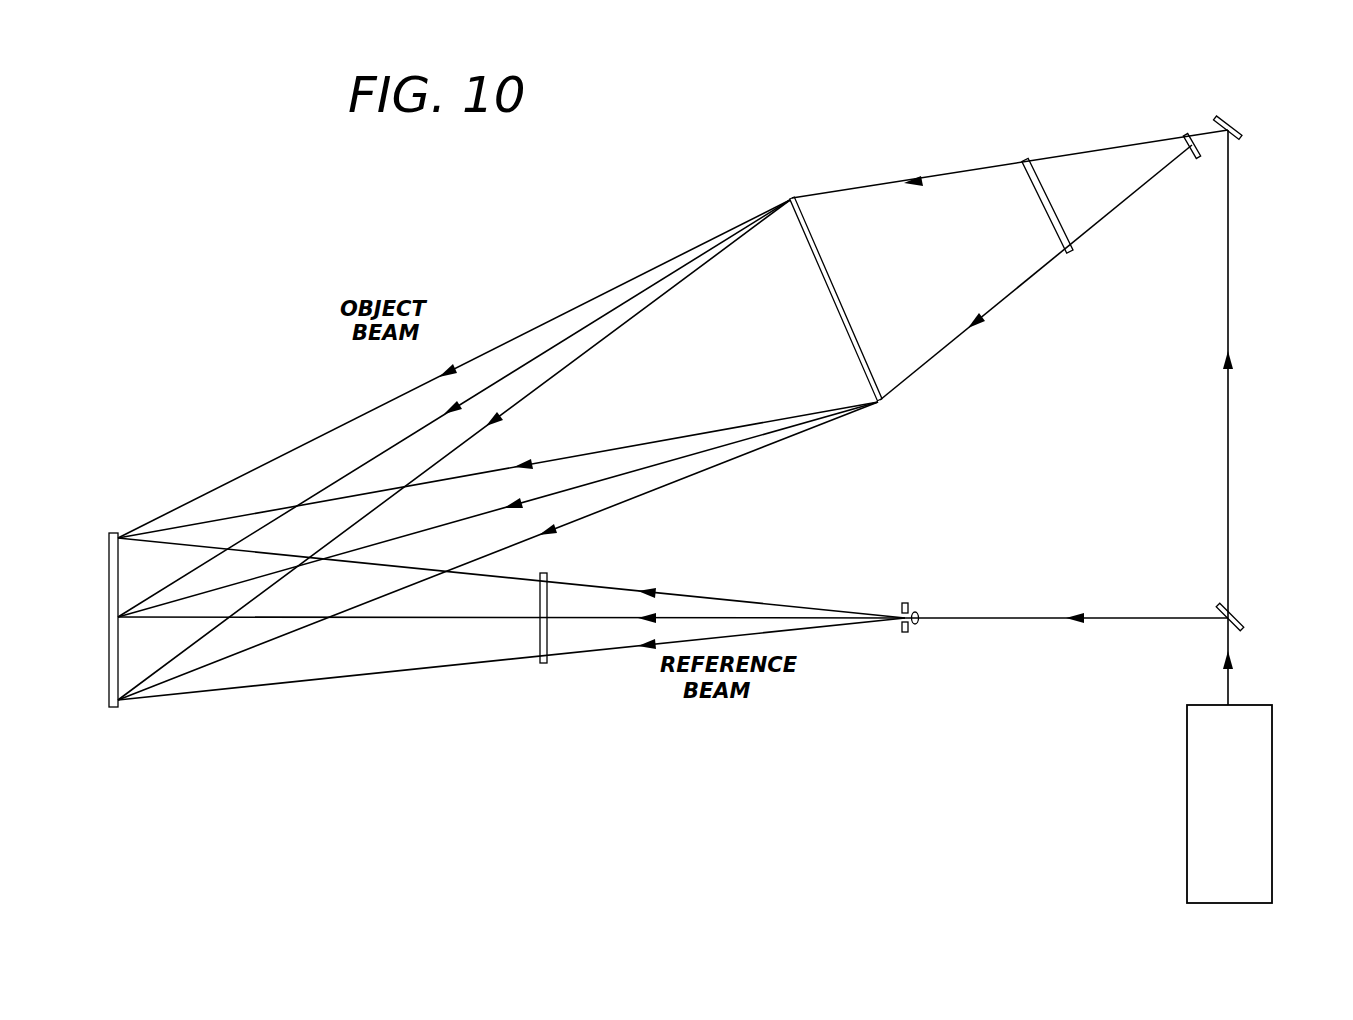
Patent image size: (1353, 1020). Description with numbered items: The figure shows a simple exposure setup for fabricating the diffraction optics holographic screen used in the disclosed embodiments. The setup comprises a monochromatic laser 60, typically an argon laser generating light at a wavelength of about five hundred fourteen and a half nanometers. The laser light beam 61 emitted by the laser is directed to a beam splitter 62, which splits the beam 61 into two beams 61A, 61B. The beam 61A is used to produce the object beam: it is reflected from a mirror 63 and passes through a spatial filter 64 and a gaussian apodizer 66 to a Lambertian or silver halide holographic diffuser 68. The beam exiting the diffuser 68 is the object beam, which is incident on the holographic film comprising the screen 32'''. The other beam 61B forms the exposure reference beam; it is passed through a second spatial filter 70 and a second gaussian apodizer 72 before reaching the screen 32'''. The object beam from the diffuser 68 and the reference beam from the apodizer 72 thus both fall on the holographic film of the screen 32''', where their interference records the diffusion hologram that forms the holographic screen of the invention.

The monochromatic laser 60 is at (1187, 768).
The laser light beam 61 is at (1226, 673).
The beam 61A is at (1231, 443).
The beam 61B is at (1009, 618).
The beam splitter 62 is at (1240, 626).
The mirror 63 is at (1240, 135).
The spatial filter 64 is at (1193, 140).
The gaussian apodizer 66 is at (1072, 250).
The holographic diffuser 68 is at (880, 402).
The spatial filter 70 is at (917, 624).
The gaussian apodizer 72 is at (543, 665).
The screen 32''' is at (90, 596).